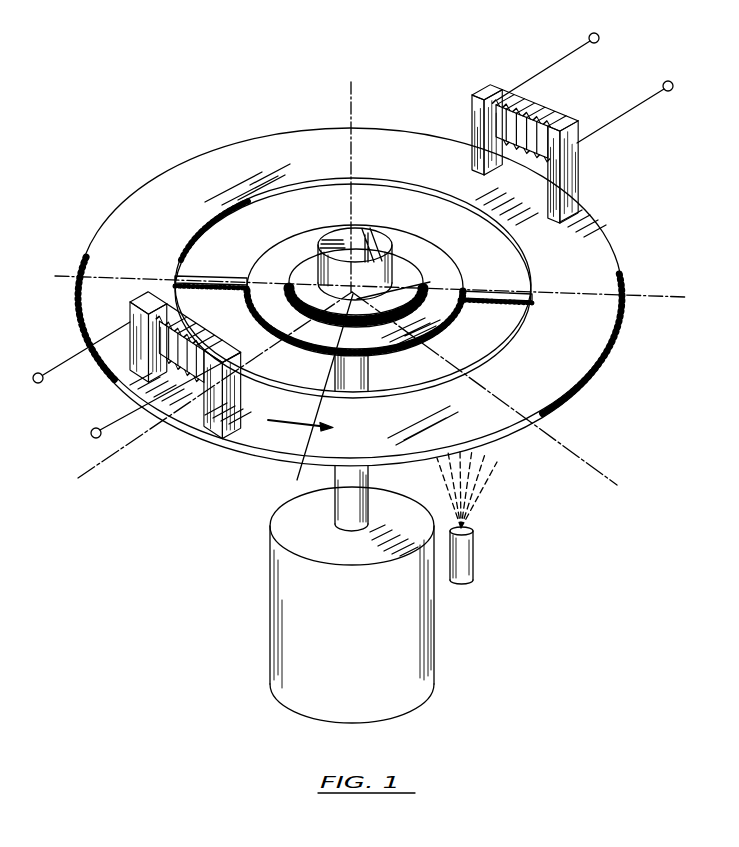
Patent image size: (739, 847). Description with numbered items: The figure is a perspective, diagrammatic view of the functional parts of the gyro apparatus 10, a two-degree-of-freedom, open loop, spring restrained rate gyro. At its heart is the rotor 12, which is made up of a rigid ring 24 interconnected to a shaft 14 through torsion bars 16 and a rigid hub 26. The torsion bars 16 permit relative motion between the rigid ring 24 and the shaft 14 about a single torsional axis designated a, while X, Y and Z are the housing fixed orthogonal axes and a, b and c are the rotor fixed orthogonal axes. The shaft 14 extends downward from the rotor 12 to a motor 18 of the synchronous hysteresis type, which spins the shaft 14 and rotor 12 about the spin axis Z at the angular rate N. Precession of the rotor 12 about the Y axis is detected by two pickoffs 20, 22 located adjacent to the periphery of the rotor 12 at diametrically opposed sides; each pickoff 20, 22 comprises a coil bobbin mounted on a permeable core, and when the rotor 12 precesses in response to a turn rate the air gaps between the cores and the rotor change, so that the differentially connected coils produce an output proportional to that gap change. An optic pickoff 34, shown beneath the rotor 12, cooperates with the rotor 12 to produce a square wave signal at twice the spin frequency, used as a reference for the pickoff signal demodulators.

The gyro apparatus 10 is at (434, 57).
The rotor 12 is at (628, 366).
The shaft 14 is at (343, 497).
The torsion bars 16 is at (202, 279).
The motor 18 is at (305, 644).
The pickoff 20 is at (603, 159).
The pickoff 22 is at (151, 209).
The rigid ring 24 is at (616, 332).
The rigid hub 26 is at (386, 238).
The optic pickoff 34 is at (478, 556).